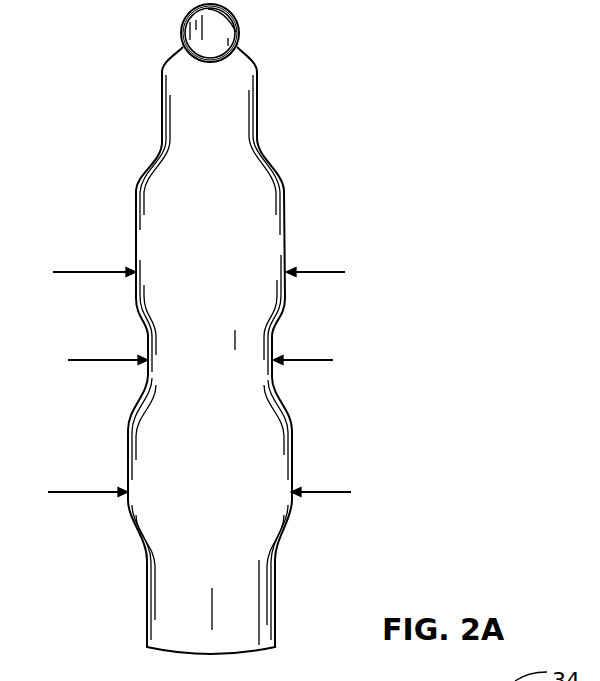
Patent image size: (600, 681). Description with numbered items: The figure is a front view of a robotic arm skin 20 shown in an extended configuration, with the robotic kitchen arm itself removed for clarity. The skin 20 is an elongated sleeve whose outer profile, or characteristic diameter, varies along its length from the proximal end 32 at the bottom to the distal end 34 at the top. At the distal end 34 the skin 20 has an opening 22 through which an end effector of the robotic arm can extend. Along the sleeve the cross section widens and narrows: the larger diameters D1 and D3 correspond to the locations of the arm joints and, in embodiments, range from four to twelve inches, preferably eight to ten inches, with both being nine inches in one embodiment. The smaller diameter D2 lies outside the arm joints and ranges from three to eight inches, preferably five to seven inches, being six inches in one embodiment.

The skin 20 is at (285, 212).
The opening 22 is at (238, 33).
The proximal end 32 is at (147, 648).
The distal end 34 is at (184, 36).
The diameter at arm joint D1 is at (73, 272).
The diameter outside arm joints D2 is at (80, 360).
The diameter at arm joint D3 is at (58, 492).